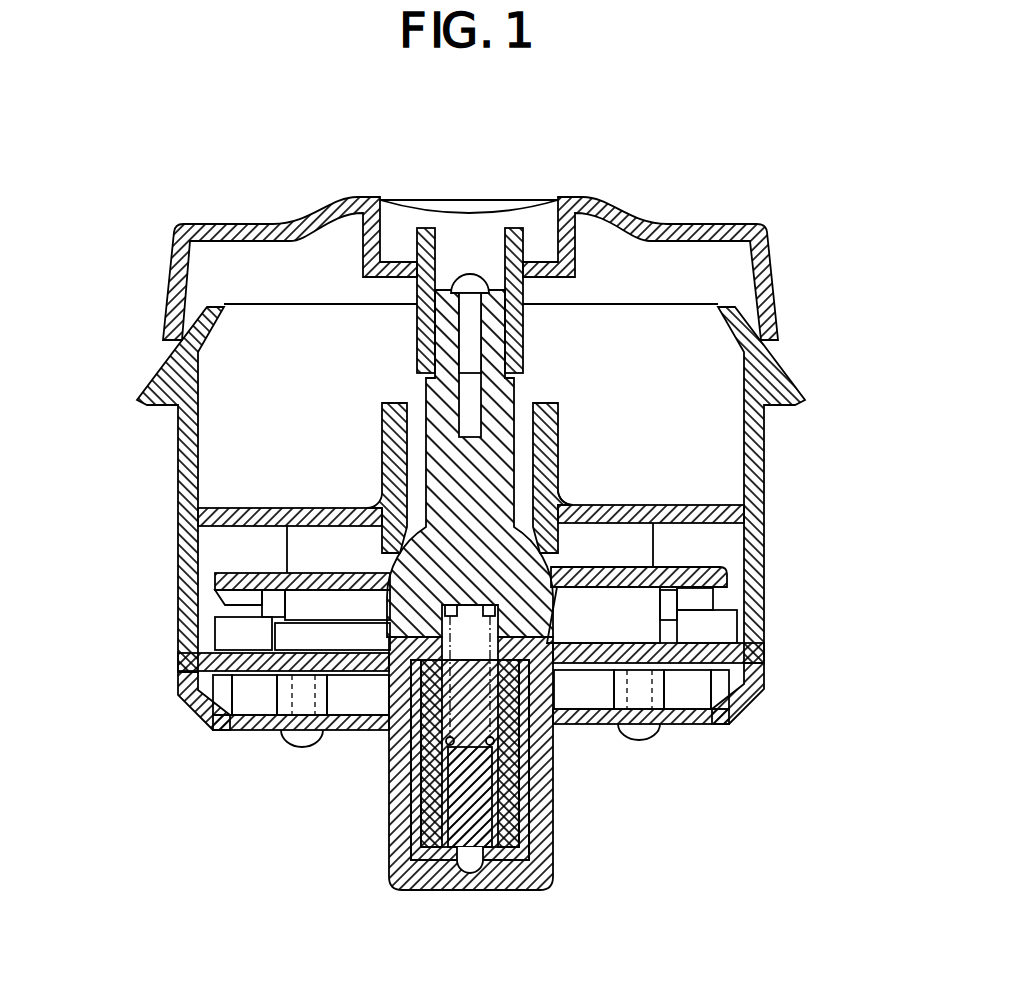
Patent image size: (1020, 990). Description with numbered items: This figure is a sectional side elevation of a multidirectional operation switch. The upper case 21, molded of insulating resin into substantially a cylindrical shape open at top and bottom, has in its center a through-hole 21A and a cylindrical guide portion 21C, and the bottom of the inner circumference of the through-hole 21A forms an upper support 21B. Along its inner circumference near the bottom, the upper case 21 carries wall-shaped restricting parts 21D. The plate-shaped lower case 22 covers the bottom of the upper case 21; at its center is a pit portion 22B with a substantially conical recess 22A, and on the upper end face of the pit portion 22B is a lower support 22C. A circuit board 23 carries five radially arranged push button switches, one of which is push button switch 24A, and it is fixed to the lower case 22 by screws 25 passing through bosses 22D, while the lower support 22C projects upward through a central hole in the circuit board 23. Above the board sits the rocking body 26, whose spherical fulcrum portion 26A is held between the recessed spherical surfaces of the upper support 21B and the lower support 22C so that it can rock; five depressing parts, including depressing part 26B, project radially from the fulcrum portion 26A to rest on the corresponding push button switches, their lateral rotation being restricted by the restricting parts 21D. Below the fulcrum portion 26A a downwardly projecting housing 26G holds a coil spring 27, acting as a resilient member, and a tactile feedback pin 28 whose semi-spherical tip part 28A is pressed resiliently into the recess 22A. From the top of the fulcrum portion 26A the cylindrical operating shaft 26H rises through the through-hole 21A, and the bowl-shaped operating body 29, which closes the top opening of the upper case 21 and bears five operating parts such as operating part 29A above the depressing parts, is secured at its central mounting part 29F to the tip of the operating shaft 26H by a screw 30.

The upper case 21 is at (765, 430).
The through-hole 21A is at (520, 430).
The upper support 21B is at (750, 518).
The cylindrical guide portion 21C is at (560, 487).
The restricting part 21D is at (705, 547).
The lower case 22 is at (745, 718).
The recess 22A is at (532, 885).
The pit portion 22B is at (550, 770).
The lower support 22C is at (640, 712).
The boss 22D is at (277, 697).
The circuit board 23 is at (215, 665).
The push button switch 24A is at (707, 627).
The screw 25 is at (287, 743).
The rocking body 26 is at (427, 480).
The fulcrum portion 26A is at (382, 527).
The depressing part 26B is at (712, 589).
The housing 26G is at (330, 623).
The operating shaft 26H is at (427, 384).
The coil spring 27 is at (432, 728).
The tactile feedback pin 28 is at (460, 793).
The tip part 28A is at (460, 866).
The operating body 29 is at (360, 202).
The operating part 29A is at (731, 229).
The mounting part 29F is at (506, 233).
The screw 30 is at (464, 275).